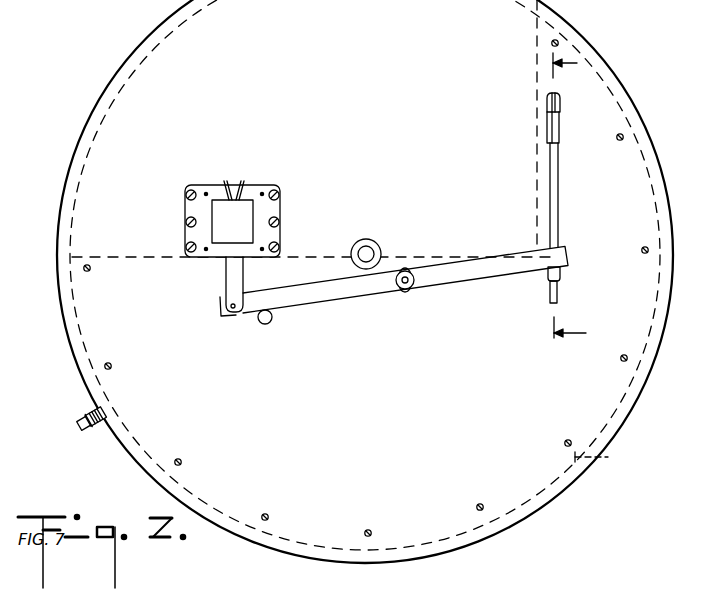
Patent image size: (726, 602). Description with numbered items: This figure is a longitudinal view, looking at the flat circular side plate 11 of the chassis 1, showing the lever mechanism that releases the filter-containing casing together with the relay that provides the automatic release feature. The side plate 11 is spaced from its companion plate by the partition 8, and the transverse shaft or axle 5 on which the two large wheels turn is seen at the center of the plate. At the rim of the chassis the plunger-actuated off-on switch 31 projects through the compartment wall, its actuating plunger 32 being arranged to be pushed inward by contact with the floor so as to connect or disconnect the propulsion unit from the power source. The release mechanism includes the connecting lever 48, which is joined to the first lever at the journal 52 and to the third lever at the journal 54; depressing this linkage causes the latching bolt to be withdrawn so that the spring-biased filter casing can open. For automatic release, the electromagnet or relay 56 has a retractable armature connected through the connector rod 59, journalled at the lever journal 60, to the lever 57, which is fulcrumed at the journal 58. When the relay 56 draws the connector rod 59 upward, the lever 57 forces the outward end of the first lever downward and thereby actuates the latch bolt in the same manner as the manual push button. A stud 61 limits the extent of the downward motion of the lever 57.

The chassis 1 is at (598, 459).
The transverse shaft or axle 5 is at (367, 254).
The partition 8 is at (569, 195).
The side plate 11 is at (580, 396).
The off-on switch 31 is at (96, 408).
The actuating plunger 32 is at (80, 430).
The connecting lever 48 is at (556, 203).
The journal 52 is at (561, 273).
The journal 54 is at (560, 110).
The electromagnet or relay 56 is at (228, 224).
The lever 57 is at (350, 294).
The journal 58 is at (409, 289).
The connector rod 59 is at (233, 279).
The lever journal 60 is at (233, 309).
The stud 61 is at (265, 325).